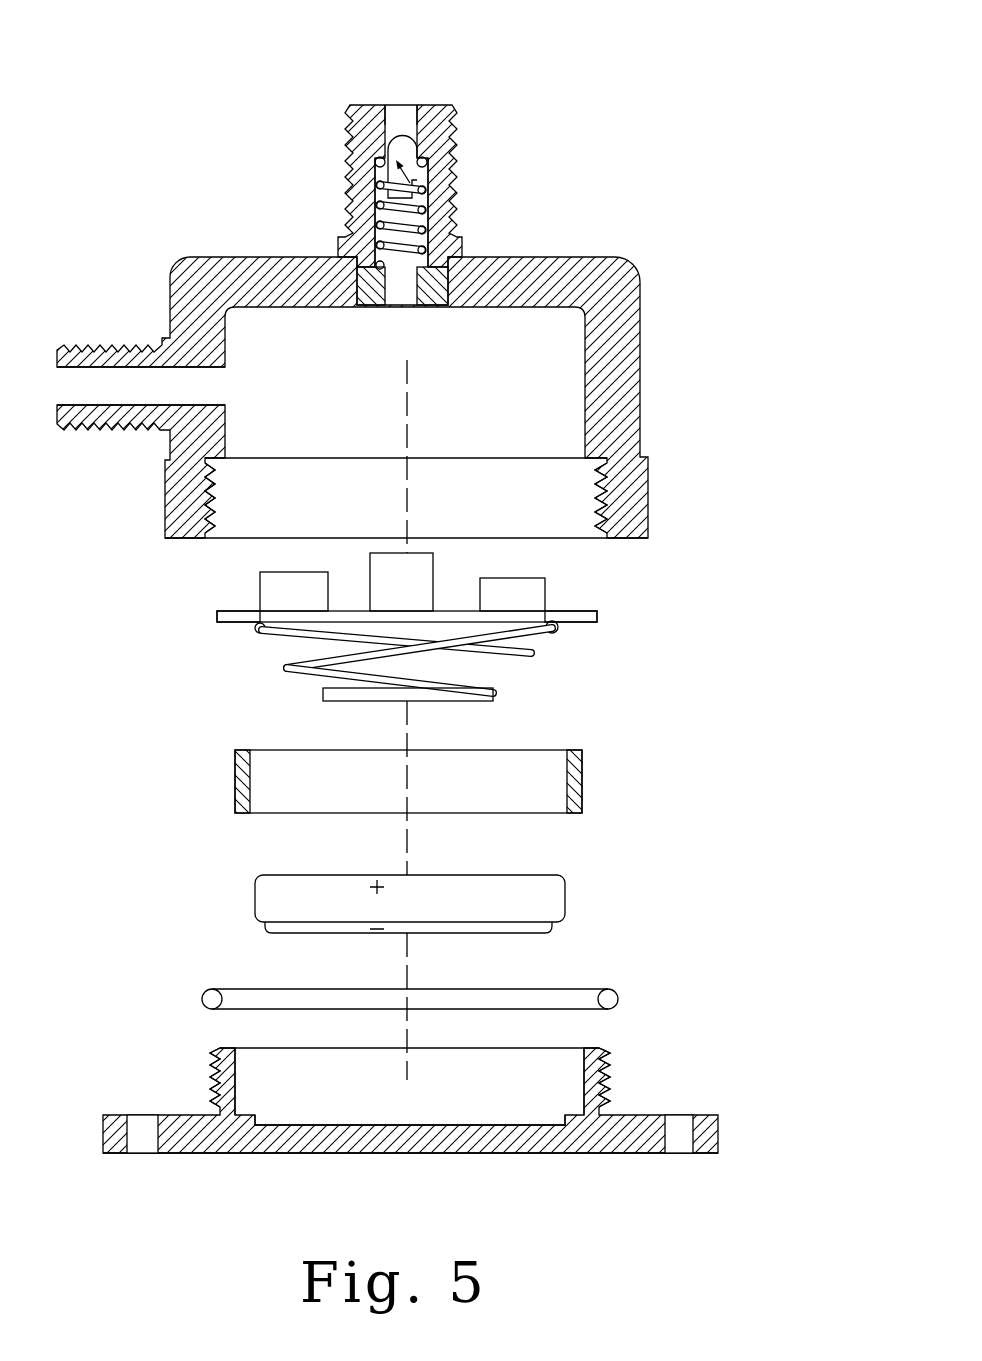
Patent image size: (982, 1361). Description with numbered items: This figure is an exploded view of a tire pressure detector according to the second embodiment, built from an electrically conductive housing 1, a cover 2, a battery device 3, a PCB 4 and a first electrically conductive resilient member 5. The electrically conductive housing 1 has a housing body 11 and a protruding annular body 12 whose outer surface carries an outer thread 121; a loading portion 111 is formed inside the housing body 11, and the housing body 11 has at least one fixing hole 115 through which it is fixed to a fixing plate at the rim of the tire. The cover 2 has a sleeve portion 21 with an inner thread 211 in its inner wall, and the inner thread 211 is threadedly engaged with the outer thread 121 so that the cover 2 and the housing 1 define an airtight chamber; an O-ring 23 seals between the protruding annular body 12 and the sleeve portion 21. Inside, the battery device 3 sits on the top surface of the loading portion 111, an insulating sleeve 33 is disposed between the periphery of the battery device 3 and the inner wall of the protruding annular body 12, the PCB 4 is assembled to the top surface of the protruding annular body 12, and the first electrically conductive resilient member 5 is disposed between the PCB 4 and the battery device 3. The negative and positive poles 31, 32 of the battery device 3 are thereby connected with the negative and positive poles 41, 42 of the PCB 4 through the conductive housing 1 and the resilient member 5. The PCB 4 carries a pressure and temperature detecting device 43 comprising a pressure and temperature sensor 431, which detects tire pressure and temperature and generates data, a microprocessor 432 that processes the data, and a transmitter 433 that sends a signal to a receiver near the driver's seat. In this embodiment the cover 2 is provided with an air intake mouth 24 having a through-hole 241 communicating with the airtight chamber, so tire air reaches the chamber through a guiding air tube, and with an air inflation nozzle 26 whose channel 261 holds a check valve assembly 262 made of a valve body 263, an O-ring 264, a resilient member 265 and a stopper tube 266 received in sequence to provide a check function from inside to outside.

The electrically conductive housing 1 is at (466, 1117).
The housing body 11 is at (565, 1155).
The loading portion 111 is at (505, 1155).
The fixing hole 115 is at (677, 1115).
The protruding annular body 12 is at (597, 1053).
The outer thread 121 is at (613, 1073).
The cover 2 is at (408, 383).
The sleeve portion 21 is at (640, 373).
The inner thread 211 is at (610, 507).
The O-ring 23 is at (612, 990).
The air intake mouth 24 is at (102, 423).
The through-hole 241 is at (100, 380).
The air inflation nozzle 26 is at (404, 152).
The channel 261 is at (400, 113).
The check valve assembly 262 is at (447, 205).
The valve body 263 is at (385, 137).
The O-ring 264 is at (373, 162).
The resilient member 265 is at (373, 225).
The stopper tube 266 is at (437, 283).
The battery device 3 is at (470, 898).
The negative pole 31 is at (447, 928).
The positive pole 32 is at (437, 883).
The insulating sleeve 33 is at (582, 790).
The PCB 4 is at (414, 611).
The negative pole 41 is at (228, 623).
The positive pole 42 is at (260, 622).
The pressure and temperature detecting device 43 is at (414, 555).
The pressure and temperature sensor 431 is at (273, 580).
The microprocessor 432 is at (377, 572).
The transmitter 433 is at (510, 585).
The first electrically conductive resilient member 5 is at (518, 658).